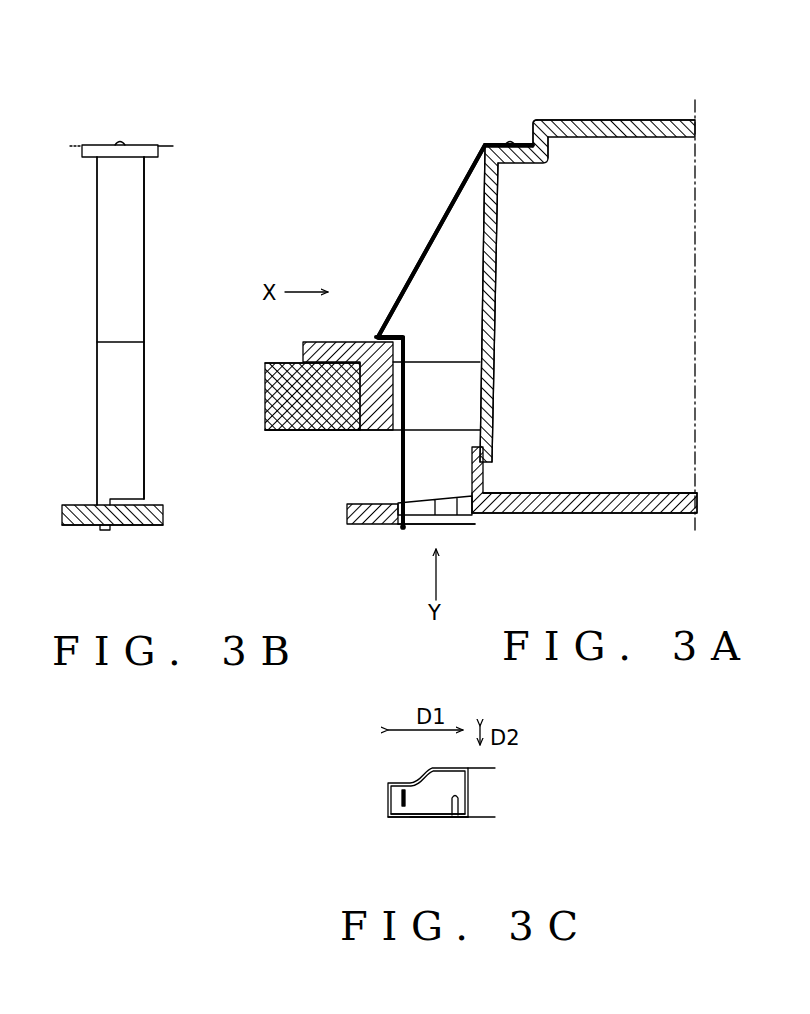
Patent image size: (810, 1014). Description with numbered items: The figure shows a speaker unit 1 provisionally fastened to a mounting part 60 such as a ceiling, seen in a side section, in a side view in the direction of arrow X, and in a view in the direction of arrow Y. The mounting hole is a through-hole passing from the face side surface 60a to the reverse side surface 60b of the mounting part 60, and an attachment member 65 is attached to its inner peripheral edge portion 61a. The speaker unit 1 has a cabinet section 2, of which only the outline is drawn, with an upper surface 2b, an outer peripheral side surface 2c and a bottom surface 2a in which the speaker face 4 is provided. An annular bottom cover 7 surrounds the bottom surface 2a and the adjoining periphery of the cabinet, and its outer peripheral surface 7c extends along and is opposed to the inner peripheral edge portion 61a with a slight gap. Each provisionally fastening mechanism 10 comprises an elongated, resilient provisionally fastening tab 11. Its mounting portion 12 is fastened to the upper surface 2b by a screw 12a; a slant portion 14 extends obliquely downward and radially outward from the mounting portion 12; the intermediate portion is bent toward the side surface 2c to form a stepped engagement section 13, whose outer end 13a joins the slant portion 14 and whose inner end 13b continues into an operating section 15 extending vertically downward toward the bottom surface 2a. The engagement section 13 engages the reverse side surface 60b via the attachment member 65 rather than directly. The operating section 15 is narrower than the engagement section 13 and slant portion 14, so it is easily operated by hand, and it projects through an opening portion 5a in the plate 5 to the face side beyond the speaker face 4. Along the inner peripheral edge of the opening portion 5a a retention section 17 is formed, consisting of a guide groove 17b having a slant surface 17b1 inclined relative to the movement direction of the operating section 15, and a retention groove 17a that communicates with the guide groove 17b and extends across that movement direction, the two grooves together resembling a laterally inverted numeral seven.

In FIG. 3A, the speaker unit 1 is at (602, 102).
In FIG. 3A, the cabinet section 2 is at (664, 290).
In FIG. 3A, the bottom surface 2a is at (590, 515).
In FIG. 3B, the upper surface 2b is at (168, 146).
In FIG. 3A, the upper surface 2b is at (520, 143).
In FIG. 3A, the outer peripheral side surface 2c is at (483, 292).
In FIG. 3A, the speaker face 4 is at (660, 515).
In FIG. 3B, the bottom plate 5 is at (78, 527).
In FIG. 3A, the bottom plate 5 is at (355, 525).
In FIG. 3C, the bottom plate 5 is at (416, 820).
In FIG. 3B, the opening portion 5a is at (130, 527).
In FIG. 3A, the opening portion 5a is at (420, 526).
In FIG. 3C, the opening portion 5a is at (428, 818).
In FIG. 3A, the bottom cover 7 is at (490, 492).
In FIG. 3A, the outer peripheral surface 7c is at (470, 490).
In FIG. 3B, the provisionally fastening mechanism 10 is at (186, 196).
In FIG. 3A, the provisionally fastening mechanism 10 is at (380, 161).
In FIG. 3B, the provisionally fastening tab 11 is at (94, 236).
In FIG. 3A, the provisionally fastening tab 11 is at (466, 172).
In FIG. 3B, the mounting portion 12 is at (140, 145).
In FIG. 3A, the mounting portion 12 is at (488, 143).
In FIG. 3B, the screw 12a is at (118, 144).
In FIG. 3B, the engagement section 13 is at (115, 342).
In FIG. 3A, the engagement section 13 is at (396, 337).
In FIG. 3A, the outer end of engagement section 13a is at (375, 338).
In FIG. 3A, the inner end of engagement section 13b is at (404, 338).
In FIG. 3B, the slant portion 14 is at (130, 237).
In FIG. 3A, the slant portion 14 is at (447, 208).
In FIG. 3B, the operating section 15 is at (105, 530).
In FIG. 3A, the operating section 15 is at (400, 530).
In FIG. 3C, the operating section 15 is at (388, 800).
In FIG. 3A, the retention section 17 is at (428, 490).
In FIG. 3C, the retention groove 17a is at (462, 797).
In FIG. 3C, the guide groove 17b is at (420, 788).
In FIG. 3C, the slant surface 17b1 is at (440, 806).
In FIG. 3A, the mounting part 60 is at (282, 431).
In FIG. 3A, the face side surface 60a is at (330, 431).
In FIG. 3A, the reverse side surface 60b is at (290, 363).
In FIG. 3A, the inner peripheral edge portion 61a is at (398, 435).
In FIG. 3A, the attachment member 65 is at (322, 343).